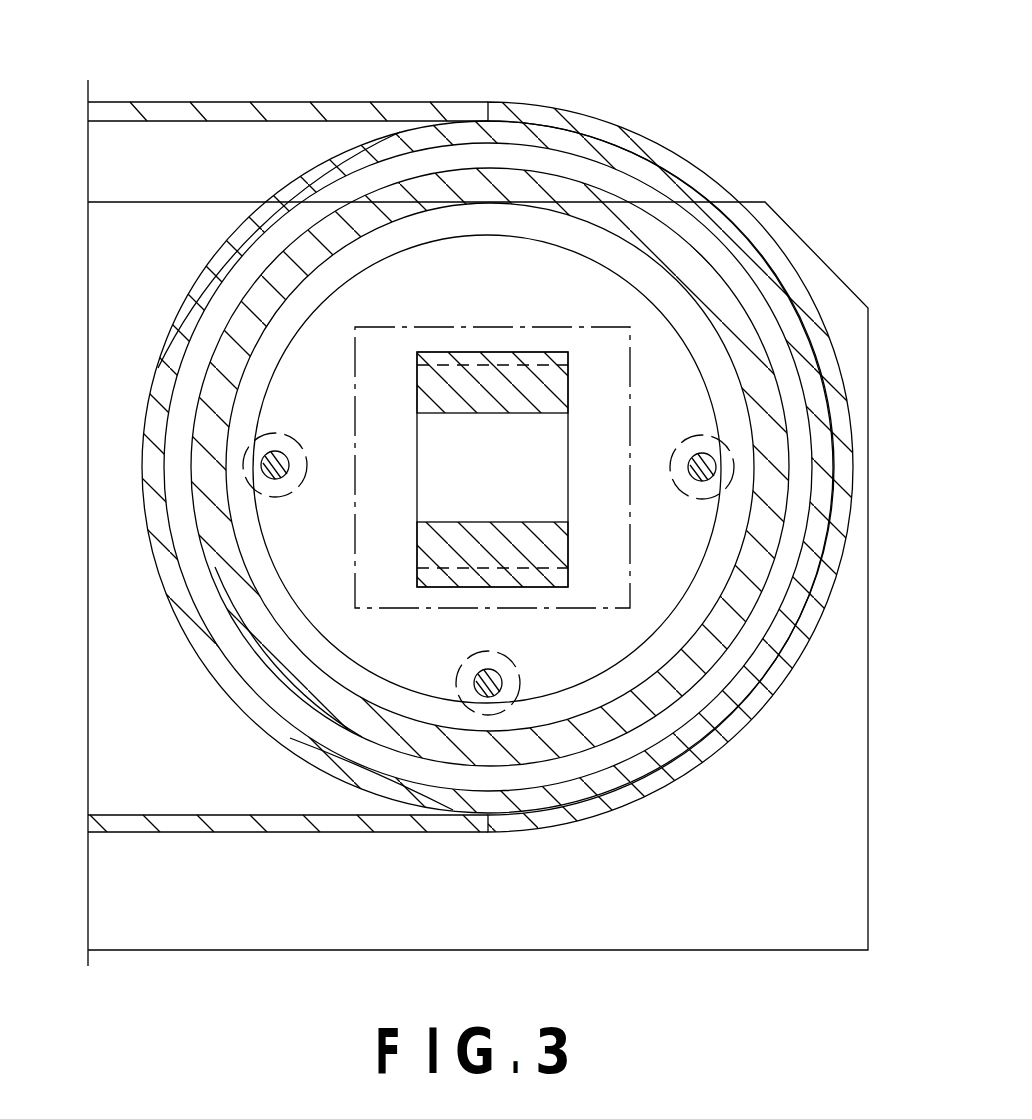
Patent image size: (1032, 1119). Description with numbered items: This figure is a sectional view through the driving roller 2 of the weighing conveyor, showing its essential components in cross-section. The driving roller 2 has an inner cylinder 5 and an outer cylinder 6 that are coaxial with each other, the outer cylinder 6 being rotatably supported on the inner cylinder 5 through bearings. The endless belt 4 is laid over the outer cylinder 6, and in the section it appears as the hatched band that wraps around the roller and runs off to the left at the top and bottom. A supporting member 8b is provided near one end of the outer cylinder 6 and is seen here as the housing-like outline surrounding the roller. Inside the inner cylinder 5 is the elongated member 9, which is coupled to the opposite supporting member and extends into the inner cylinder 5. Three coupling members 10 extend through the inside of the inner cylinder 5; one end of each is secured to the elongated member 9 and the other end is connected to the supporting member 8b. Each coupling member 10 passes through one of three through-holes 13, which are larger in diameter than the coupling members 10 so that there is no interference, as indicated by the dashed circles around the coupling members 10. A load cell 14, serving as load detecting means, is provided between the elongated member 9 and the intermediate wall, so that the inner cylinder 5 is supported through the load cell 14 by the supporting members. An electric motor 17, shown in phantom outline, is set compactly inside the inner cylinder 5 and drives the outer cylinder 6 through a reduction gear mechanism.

The driving roller 2 is at (592, 62).
The endless belt 4 is at (166, 108).
The inner cylinder 5 is at (573, 190).
The outer cylinder 6 is at (397, 143).
The supporting member 8b is at (860, 318).
The elongated member 9 is at (318, 350).
The coupling members 10 is at (280, 453).
The through-holes 13 is at (287, 497).
The load cell 14 is at (468, 437).
The electric motor 17 is at (575, 327).